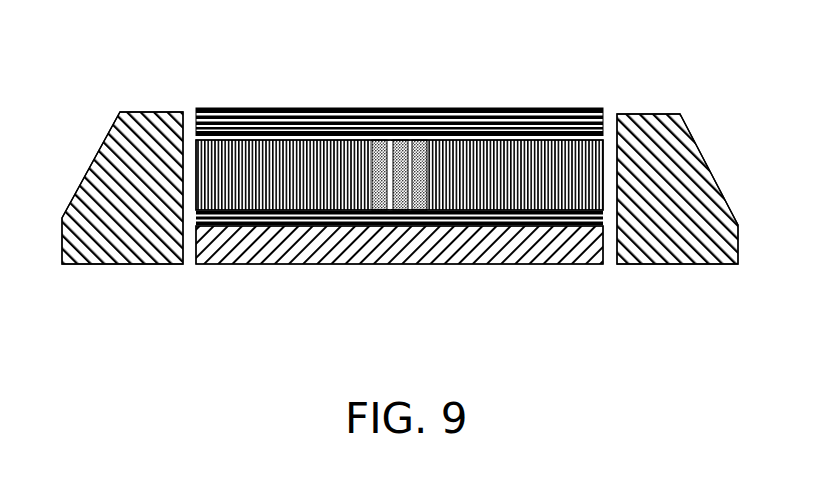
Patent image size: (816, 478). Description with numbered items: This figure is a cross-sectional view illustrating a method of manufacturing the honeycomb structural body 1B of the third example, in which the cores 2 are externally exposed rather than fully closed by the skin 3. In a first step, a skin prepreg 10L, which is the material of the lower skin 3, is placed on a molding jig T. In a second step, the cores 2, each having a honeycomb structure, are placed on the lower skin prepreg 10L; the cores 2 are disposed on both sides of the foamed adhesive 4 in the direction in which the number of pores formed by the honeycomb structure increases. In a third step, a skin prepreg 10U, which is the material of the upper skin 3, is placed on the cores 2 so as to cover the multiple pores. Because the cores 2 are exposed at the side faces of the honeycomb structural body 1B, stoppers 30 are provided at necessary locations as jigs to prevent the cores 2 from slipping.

The honeycomb structural body 1B is at (387, 179).
The cores 2 is at (392, 134).
The skin 3 is at (305, 110).
The foamed adhesive 4 is at (401, 140).
The skin prepreg 10U is at (237, 110).
The skin prepreg 10L is at (190, 233).
The stoppers 30 is at (697, 145).
The molding jig T is at (403, 264).